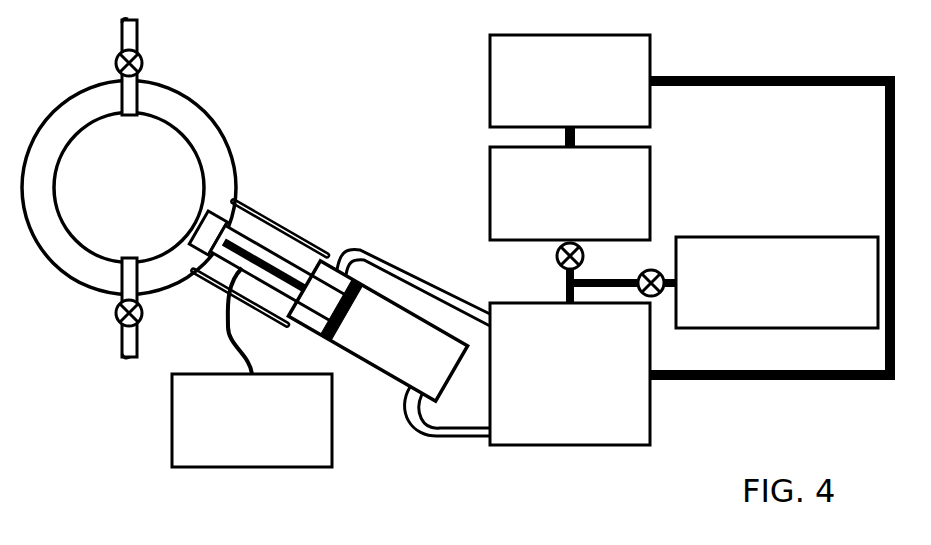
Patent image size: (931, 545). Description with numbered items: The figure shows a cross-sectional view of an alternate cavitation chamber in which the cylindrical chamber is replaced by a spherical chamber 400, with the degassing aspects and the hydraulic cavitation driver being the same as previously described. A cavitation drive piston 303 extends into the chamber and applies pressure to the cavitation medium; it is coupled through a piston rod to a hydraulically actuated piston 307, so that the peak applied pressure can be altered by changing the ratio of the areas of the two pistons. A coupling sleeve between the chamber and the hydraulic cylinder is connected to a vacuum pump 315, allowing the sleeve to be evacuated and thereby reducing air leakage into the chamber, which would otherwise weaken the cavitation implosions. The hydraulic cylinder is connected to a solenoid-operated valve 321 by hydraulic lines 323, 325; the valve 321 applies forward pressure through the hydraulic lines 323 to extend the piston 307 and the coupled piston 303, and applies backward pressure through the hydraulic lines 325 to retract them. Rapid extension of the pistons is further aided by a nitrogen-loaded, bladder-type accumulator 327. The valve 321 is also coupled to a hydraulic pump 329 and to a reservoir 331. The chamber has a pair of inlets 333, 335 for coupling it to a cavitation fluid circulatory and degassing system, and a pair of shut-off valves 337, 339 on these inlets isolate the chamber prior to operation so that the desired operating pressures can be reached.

The spherical chamber 400 is at (240, 103).
The cavitation drive piston 303 is at (230, 205).
The hydraulically actuated piston 307 is at (338, 333).
The vacuum pump 315 is at (290, 468).
The valve 321 is at (568, 446).
The hydraulic lines 323 is at (448, 439).
The hydraulic lines 325 is at (439, 297).
The accumulator 327 is at (777, 329).
The hydraulic pump 329 is at (490, 194).
The reservoir 331 is at (490, 81).
The inlet 333 is at (130, 97).
The inlet 335 is at (130, 282).
The shut-off valve 337 is at (143, 63).
The shut-off valve 339 is at (118, 312).